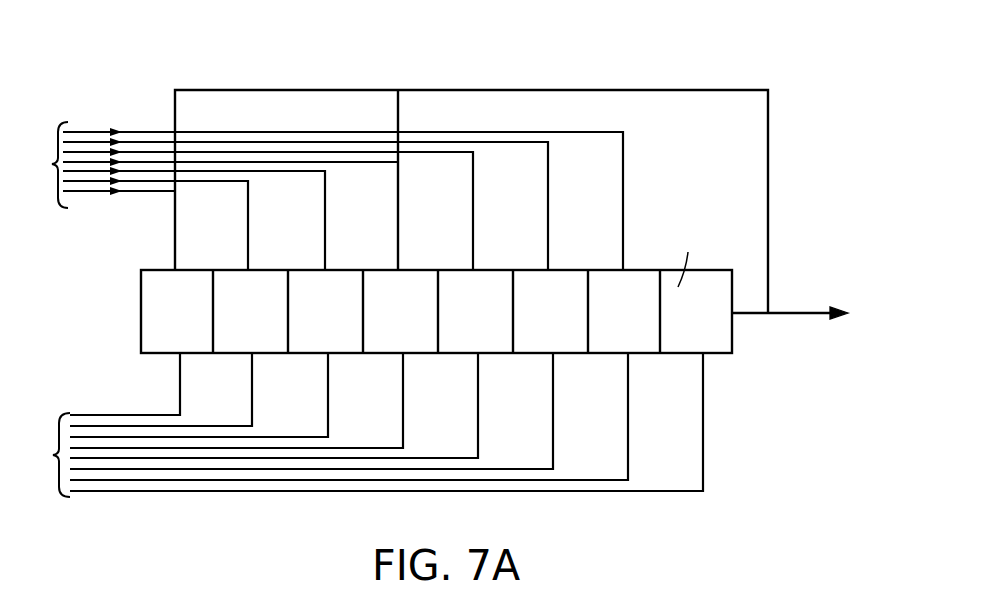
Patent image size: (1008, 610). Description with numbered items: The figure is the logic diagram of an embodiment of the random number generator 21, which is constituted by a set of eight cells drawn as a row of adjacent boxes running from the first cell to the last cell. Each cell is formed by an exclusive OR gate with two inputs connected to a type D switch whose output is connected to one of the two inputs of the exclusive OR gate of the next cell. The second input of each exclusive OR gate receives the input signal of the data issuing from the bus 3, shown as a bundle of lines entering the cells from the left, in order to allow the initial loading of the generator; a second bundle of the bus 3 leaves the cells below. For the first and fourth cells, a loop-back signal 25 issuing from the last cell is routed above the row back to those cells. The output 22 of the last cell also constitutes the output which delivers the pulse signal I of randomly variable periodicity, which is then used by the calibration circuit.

The bus 3 is at (364, 309).
The random number generator 21 is at (126, 325).
The output 22 is at (792, 315).
The loop-back signal 25 is at (788, 210).